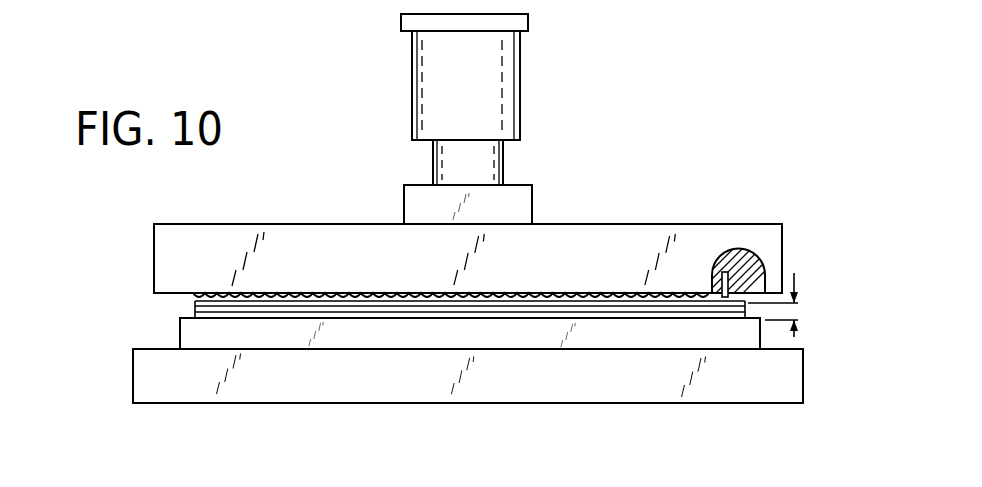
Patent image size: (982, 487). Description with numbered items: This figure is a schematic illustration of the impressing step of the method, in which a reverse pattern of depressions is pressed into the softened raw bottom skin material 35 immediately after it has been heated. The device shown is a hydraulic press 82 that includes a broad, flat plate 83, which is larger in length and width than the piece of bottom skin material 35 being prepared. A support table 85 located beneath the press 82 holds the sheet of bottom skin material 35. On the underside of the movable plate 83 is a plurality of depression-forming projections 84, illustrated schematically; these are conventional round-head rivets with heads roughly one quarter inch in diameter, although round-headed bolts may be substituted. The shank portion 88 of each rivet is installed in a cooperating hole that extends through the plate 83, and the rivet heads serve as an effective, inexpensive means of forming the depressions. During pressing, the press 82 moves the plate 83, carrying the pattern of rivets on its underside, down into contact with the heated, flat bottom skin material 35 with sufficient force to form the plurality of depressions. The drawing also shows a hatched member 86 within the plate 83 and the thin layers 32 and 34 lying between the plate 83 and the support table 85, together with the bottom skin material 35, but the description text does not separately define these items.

The hydraulic press 82 is at (548, 107).
The plate 83 is at (372, 250).
The depression-forming projections 84 is at (530, 297).
The hemispherical member 86 is at (732, 235).
The shank portion 88 is at (757, 257).
The wafer 32 is at (193, 302).
The layer 34 is at (193, 309).
The support table 85 is at (195, 332).
The bottom skin material 35 is at (797, 312).